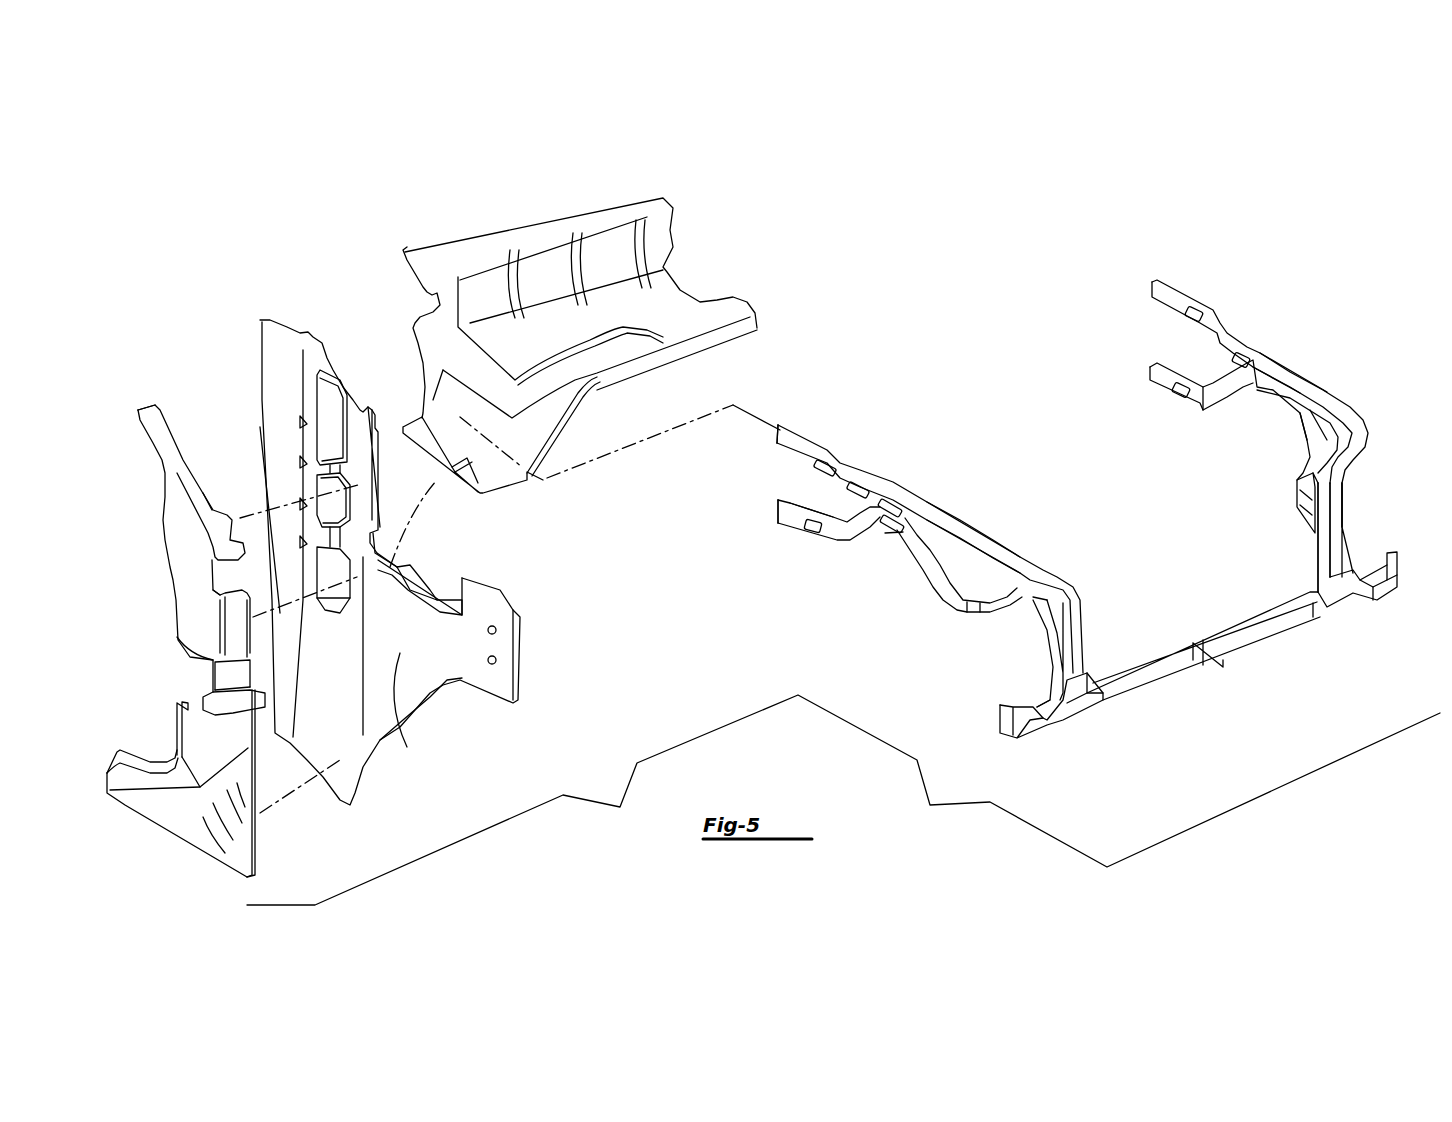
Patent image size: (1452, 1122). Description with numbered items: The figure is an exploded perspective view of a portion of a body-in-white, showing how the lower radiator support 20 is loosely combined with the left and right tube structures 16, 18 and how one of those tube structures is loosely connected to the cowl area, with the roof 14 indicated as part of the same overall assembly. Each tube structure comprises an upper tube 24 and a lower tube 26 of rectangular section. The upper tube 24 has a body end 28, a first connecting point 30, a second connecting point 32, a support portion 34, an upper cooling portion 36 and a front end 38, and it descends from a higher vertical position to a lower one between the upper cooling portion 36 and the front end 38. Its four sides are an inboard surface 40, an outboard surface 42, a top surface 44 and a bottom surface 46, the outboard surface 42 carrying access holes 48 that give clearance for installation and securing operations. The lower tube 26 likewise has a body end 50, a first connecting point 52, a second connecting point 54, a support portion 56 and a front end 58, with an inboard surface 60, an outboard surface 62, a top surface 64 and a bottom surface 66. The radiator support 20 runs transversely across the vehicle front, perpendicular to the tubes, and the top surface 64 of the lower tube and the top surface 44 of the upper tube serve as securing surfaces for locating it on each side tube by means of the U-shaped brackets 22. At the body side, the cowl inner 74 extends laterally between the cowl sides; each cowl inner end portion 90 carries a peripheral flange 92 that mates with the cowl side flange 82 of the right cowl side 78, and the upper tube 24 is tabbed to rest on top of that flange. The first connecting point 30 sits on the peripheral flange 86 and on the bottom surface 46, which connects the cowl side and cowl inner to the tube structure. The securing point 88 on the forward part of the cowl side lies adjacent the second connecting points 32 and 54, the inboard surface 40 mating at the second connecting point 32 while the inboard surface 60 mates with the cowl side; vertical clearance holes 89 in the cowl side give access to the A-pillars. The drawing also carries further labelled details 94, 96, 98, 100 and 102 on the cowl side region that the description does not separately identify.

The roof 14 is at (1128, 494).
The left tube structure 16 is at (1267, 303).
The right tube structure 18 is at (763, 542).
The radiator support structure 20 is at (1253, 643).
The U-shaped bracket 22 is at (1083, 703).
The upper tube 24 is at (823, 450).
The lower tube 26 is at (787, 513).
The body end 28 is at (778, 437).
The first connecting point 30 is at (867, 467).
The second connecting point 32 is at (905, 495).
The support portion 34 is at (980, 543).
The upper cooling portion 36 is at (1057, 580).
The front end 38 is at (1318, 567).
The inboard surface 40 is at (1233, 357).
The outboard surface 42 is at (913, 527).
The top surface 44 is at (814, 466).
The bottom surface 46 is at (777, 513).
The access holes 48 is at (803, 513).
The body end 50 is at (887, 533).
The first connecting point 52 is at (950, 593).
The second connecting point 54 is at (1050, 687).
The support portion 56 is at (1305, 440).
The front end 58 is at (1047, 623).
The inboard surface 60 is at (807, 533).
The outboard surface 62 is at (1155, 312).
The top surface 64 is at (1310, 470).
The bottom surface 66 is at (1203, 403).
The cowl inner 74 is at (425, 287).
The right cowl side 78 is at (448, 660).
The cowl side flange 82 is at (150, 405).
The peripheral flange 86 is at (392, 568).
The securing point 88 is at (496, 630).
The vertical clearance holes 89 is at (355, 487).
The cowl inner end portion 90 is at (548, 410).
The peripheral flange 92 is at (437, 433).
The pillar 94 is at (180, 537).
The lower tab 96 is at (227, 727).
The pillar bracket 98 is at (230, 637).
The bracket column 100 is at (240, 675).
The bracket box 102 is at (234, 579).